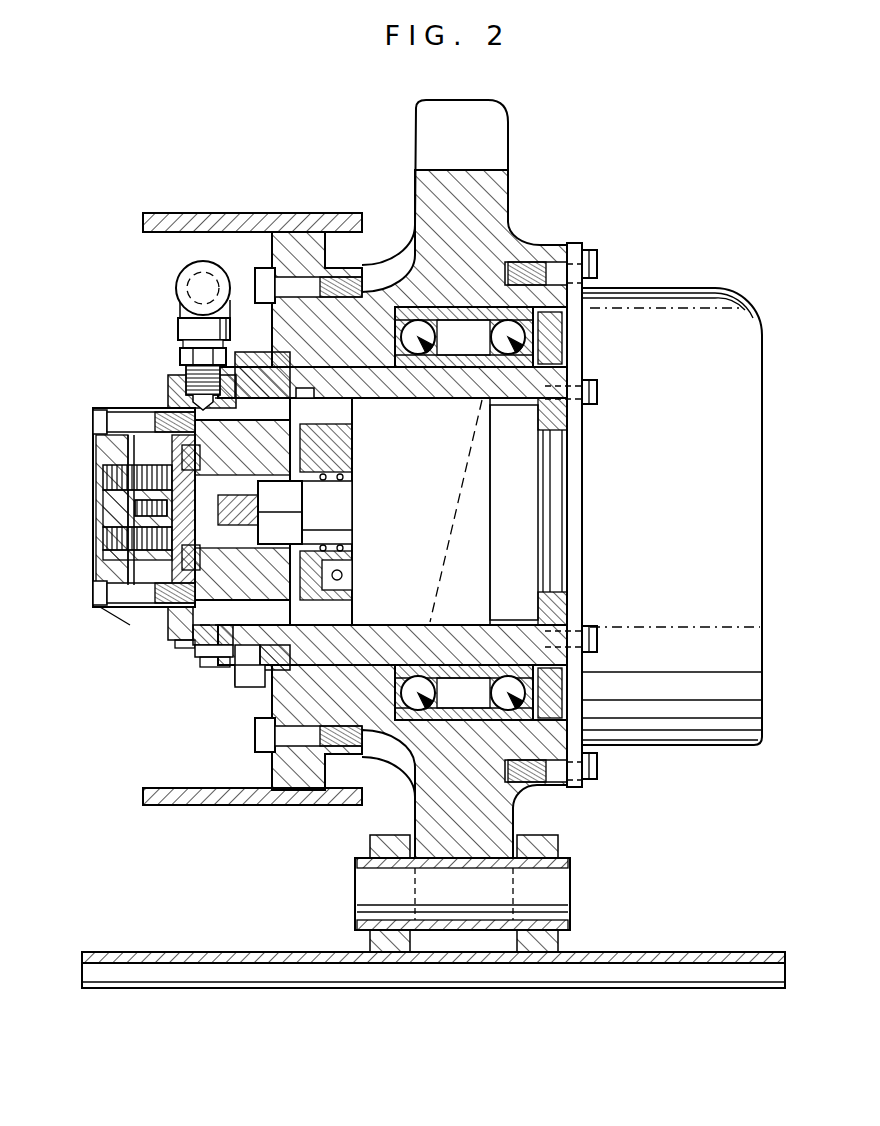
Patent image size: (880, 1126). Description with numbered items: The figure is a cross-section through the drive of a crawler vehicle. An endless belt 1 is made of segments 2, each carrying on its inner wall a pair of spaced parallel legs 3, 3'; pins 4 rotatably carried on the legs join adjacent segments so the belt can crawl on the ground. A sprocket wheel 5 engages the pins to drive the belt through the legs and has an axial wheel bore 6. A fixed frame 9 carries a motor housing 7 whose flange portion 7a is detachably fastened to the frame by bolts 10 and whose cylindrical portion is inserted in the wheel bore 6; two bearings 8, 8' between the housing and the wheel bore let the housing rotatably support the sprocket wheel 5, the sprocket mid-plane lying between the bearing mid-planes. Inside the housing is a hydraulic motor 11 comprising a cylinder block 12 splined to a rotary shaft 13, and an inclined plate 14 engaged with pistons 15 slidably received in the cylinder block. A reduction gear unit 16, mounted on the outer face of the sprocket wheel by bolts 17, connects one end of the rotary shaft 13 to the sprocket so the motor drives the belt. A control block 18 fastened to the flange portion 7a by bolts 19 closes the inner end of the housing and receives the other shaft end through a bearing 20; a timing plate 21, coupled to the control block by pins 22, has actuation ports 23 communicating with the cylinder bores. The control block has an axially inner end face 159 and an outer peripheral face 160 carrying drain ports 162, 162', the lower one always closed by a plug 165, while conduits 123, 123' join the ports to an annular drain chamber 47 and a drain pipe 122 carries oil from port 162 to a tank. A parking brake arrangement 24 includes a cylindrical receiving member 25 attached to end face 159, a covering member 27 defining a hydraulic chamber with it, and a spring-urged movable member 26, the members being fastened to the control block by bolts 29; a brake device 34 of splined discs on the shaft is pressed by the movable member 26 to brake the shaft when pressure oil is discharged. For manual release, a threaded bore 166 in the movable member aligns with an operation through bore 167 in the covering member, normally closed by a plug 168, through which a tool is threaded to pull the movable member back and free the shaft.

The endless belt 1 is at (622, 952).
The segment 2 is at (708, 975).
The leg 3 is at (537, 872).
The leg 3' is at (371, 881).
The pin 4 is at (560, 883).
The sprocket wheel 5 is at (505, 193).
The axial wheel bore 6 is at (418, 312).
The motor housing 7 is at (572, 405).
The flange portion 7a is at (343, 278).
The bearing 8 is at (526, 519).
The bearing 8' is at (392, 444).
The fixed frame 9 is at (190, 214).
The bolts 10 is at (262, 268).
The hydraulic motor 11 is at (480, 568).
The cylinder block 12 is at (352, 470).
The rotary shaft 13 is at (352, 519).
The inclined plate 14 is at (468, 452).
The piston 15 is at (352, 575).
The reduction gear unit 16 is at (688, 290).
The bolts 17 is at (597, 266).
The control block 18 is at (178, 642).
The bolts 19 is at (242, 365).
The bearing 20 is at (242, 511).
The timing plate 21 is at (300, 510).
The pins 22 is at (306, 394).
The actuation ports 23 is at (330, 445).
The parking brake arrangement 24 is at (100, 560).
The cylindrical receiving member 25 is at (132, 622).
The movable member 26 is at (97, 440).
The covering member 27 is at (103, 492).
The bolts 29 is at (100, 412).
The brake device 34 is at (168, 614).
The annular drain chamber 47 is at (348, 412).
The drain pipe 122 is at (180, 285).
The conduit 123 is at (175, 389).
The conduit 123' is at (250, 688).
The axially inner end face 159 is at (172, 630).
The outer peripheral face 160 is at (200, 667).
The drain port 162 is at (176, 355).
The drain port 162' is at (178, 688).
The plug 165 is at (238, 672).
The threaded bore 166 is at (180, 370).
The operation through bore 167 is at (100, 510).
The plug 168 is at (100, 538).